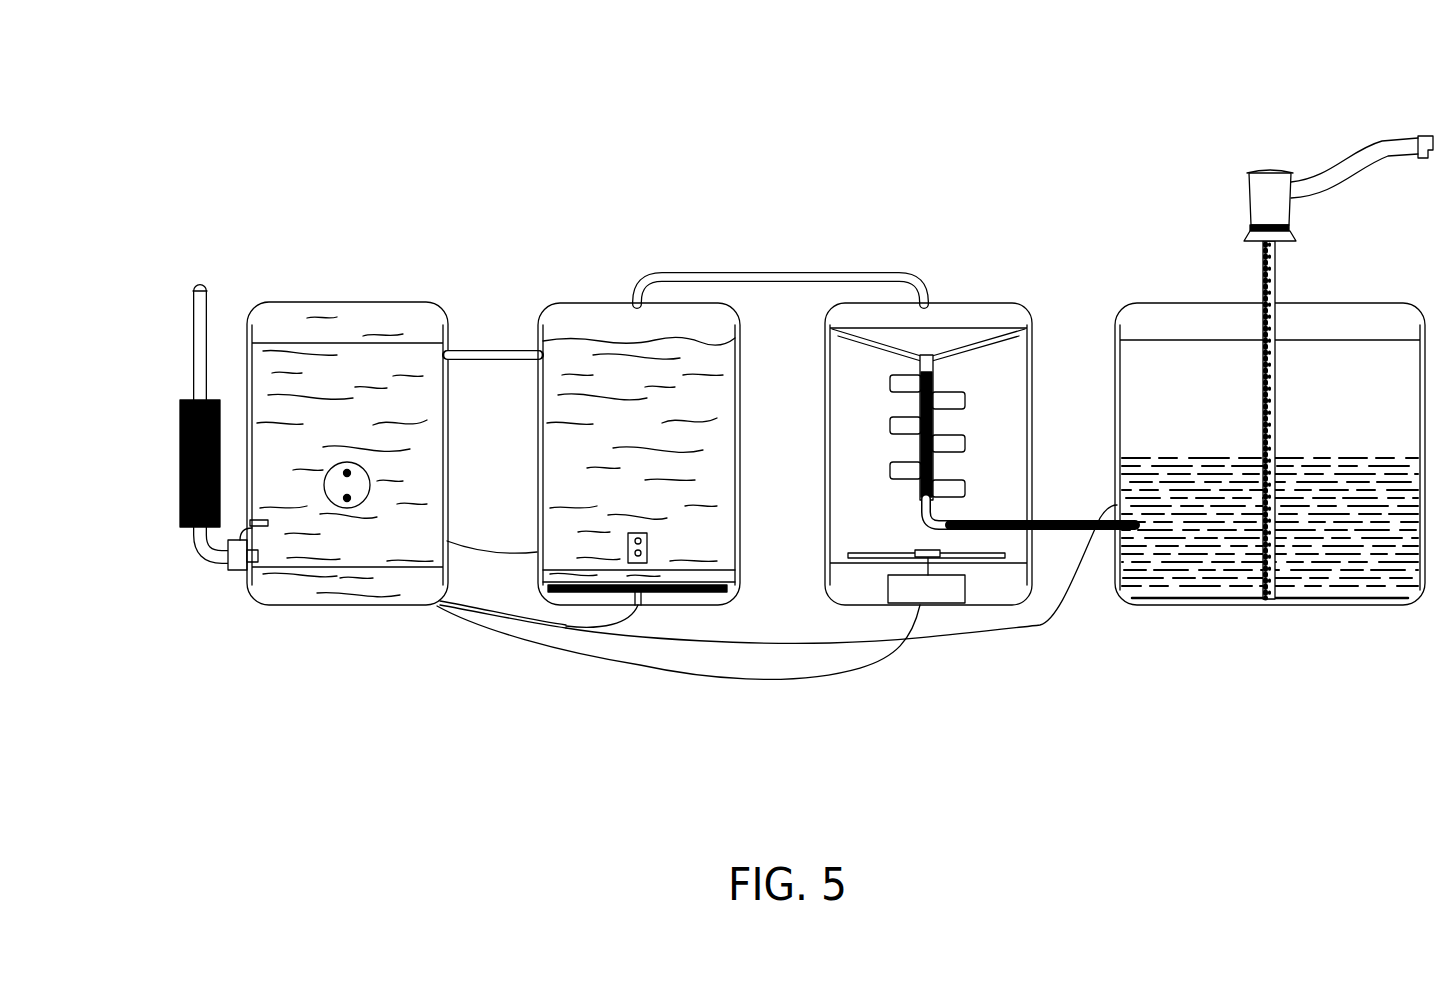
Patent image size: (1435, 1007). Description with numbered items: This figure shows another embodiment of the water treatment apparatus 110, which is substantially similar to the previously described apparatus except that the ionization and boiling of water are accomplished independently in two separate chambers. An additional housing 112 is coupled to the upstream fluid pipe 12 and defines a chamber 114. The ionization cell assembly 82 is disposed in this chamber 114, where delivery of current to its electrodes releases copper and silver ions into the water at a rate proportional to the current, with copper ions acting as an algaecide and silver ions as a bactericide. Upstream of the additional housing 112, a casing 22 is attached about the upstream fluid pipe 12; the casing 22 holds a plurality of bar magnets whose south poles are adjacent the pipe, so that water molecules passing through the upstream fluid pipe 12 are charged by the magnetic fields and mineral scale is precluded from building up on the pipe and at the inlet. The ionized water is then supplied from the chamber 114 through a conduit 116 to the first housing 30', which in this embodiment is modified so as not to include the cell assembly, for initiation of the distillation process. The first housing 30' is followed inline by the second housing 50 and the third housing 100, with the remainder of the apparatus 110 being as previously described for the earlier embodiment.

The water treatment apparatus 110 is at (666, 117).
The additional housing 112 is at (380, 290).
The conduit 116 is at (493, 345).
The first housing 30' is at (639, 408).
The second housing 50 is at (980, 285).
The third housing 100 is at (1182, 280).
The upstream fluid pipe 12 is at (192, 347).
The casing 22 is at (180, 462).
The chamber 114 is at (430, 437).
The cell assembly 82 is at (335, 498).